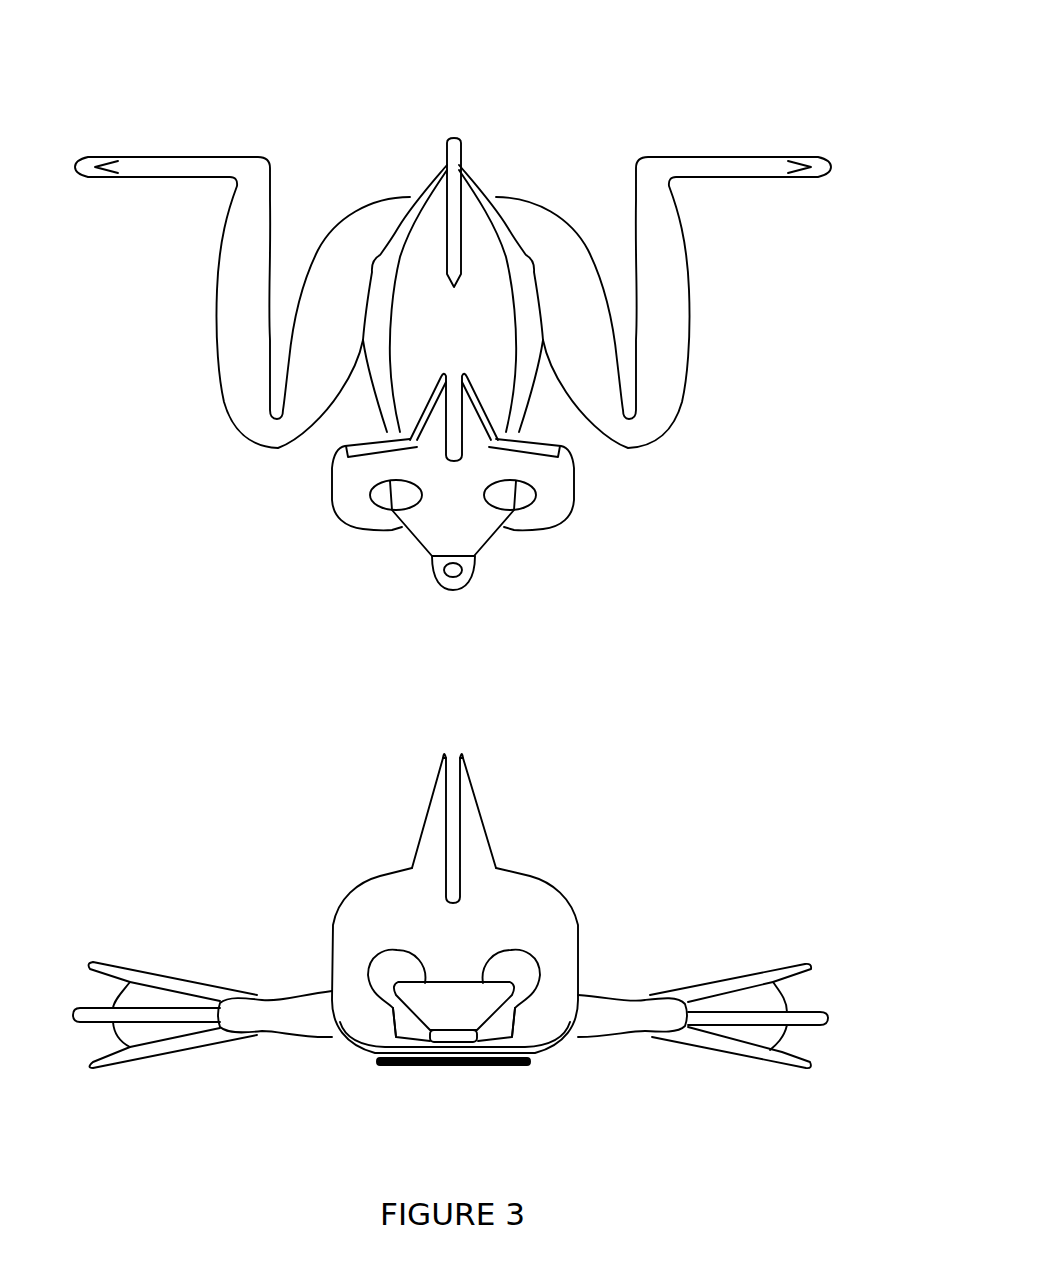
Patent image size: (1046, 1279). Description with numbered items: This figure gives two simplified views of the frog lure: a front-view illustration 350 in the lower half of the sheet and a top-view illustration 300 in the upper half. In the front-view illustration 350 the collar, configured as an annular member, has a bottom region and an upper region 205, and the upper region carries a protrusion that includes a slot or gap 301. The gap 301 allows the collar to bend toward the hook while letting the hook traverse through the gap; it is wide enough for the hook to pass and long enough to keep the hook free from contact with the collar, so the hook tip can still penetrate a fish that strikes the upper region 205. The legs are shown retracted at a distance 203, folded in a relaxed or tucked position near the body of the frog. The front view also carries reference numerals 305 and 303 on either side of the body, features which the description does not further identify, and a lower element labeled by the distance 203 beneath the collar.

The top-view illustration 300 is at (596, 90).
The front-view illustration 350 is at (450, 889).
The slot or gap 301 is at (451, 762).
The upper region 205 is at (481, 800).
The first body portion 305 is at (378, 876).
The second body portion 303 is at (528, 876).
The distance 203 is at (509, 1066).